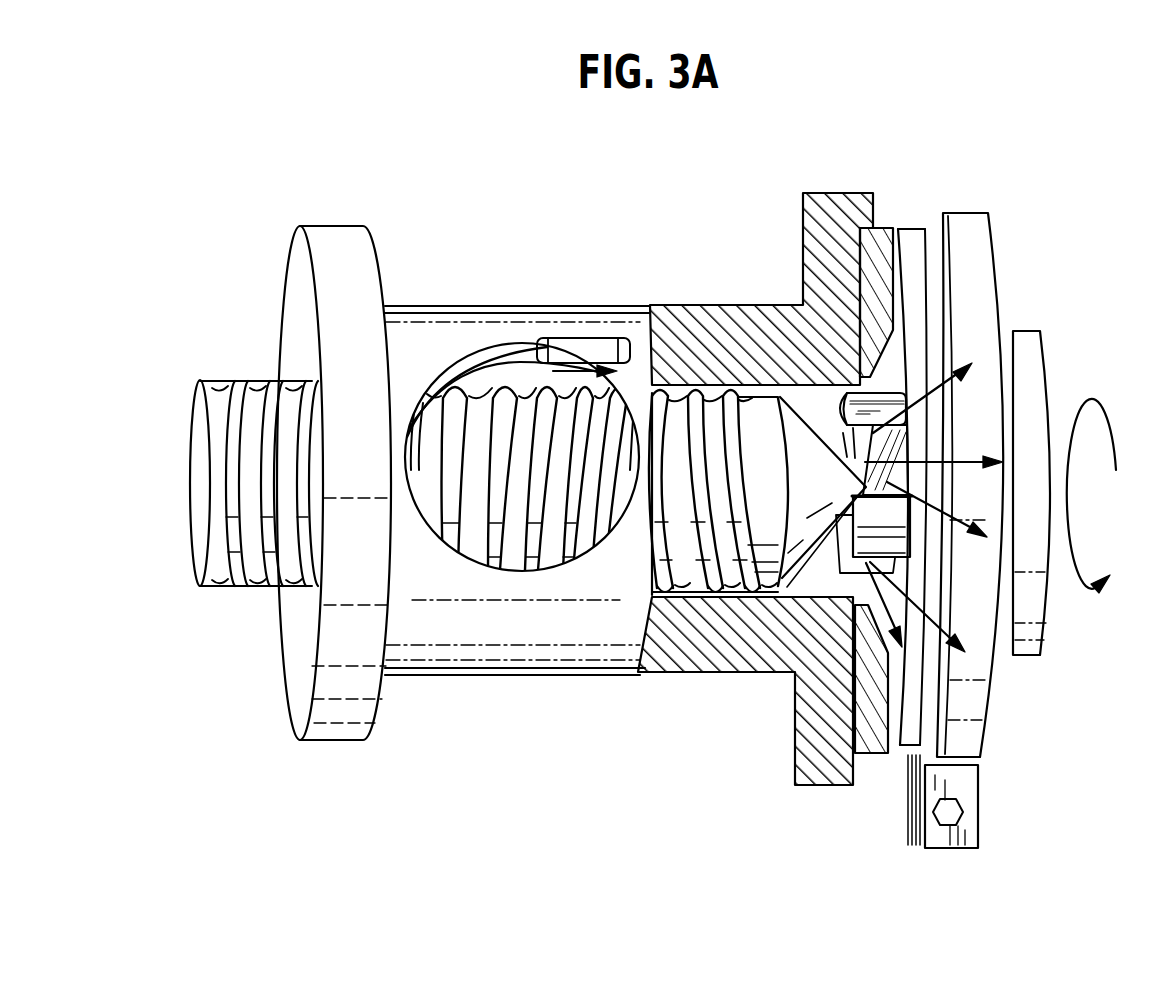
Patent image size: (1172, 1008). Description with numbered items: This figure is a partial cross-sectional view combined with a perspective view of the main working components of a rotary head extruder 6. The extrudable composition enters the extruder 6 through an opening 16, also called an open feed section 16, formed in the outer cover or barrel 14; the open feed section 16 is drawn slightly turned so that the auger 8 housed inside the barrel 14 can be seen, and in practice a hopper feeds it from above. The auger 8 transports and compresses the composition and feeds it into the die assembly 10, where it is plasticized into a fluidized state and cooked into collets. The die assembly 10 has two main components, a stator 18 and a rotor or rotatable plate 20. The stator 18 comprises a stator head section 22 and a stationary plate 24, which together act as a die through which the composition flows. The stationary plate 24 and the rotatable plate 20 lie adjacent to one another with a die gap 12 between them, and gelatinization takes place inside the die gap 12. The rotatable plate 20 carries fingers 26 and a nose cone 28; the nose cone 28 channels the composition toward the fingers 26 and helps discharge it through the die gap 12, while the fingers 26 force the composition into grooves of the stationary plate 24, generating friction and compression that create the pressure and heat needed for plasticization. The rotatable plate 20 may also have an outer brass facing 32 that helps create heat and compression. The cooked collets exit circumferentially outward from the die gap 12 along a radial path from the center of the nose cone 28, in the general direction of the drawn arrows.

The extruder 6 is at (401, 166).
The auger 8 is at (468, 352).
The die assembly 10 is at (798, 118).
The die gap 12 is at (893, 778).
The barrel 14 is at (495, 306).
The open feed section 16 is at (528, 354).
The stator 18 is at (916, 180).
The rotatable plate 20 is at (913, 222).
The stator head section 22 is at (767, 650).
The stationary plate 24 is at (880, 755).
The fingers 26 is at (840, 405).
The nose cone 28 is at (880, 457).
The outer brass facing 32 is at (902, 348).